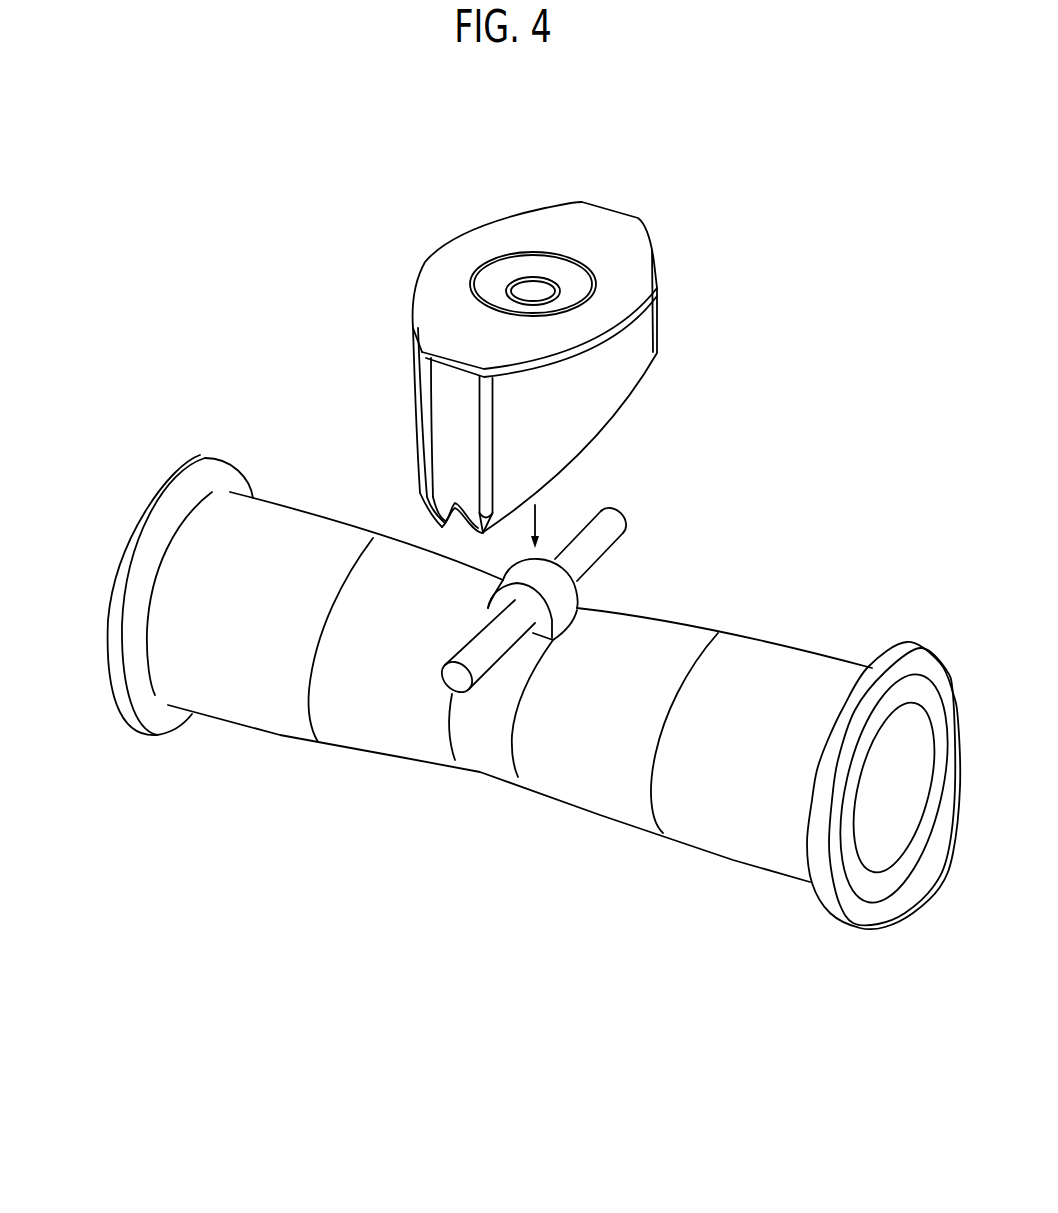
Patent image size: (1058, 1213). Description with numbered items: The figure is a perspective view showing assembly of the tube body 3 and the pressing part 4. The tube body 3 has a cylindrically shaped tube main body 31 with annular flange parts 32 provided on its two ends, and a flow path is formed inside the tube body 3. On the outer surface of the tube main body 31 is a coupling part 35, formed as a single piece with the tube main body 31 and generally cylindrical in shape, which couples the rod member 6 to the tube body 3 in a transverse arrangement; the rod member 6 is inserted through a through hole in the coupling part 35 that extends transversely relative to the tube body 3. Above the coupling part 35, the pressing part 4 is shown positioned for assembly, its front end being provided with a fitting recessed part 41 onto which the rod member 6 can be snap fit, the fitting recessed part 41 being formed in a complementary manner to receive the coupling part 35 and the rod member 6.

The tube body 3 is at (505, 765).
The tube main body 31 is at (578, 775).
The flange parts 32 is at (118, 688).
The coupling part 35 is at (567, 600).
The pressing part 4 is at (542, 508).
The fitting recessed part 41 is at (458, 528).
The rod member 6 is at (487, 658).